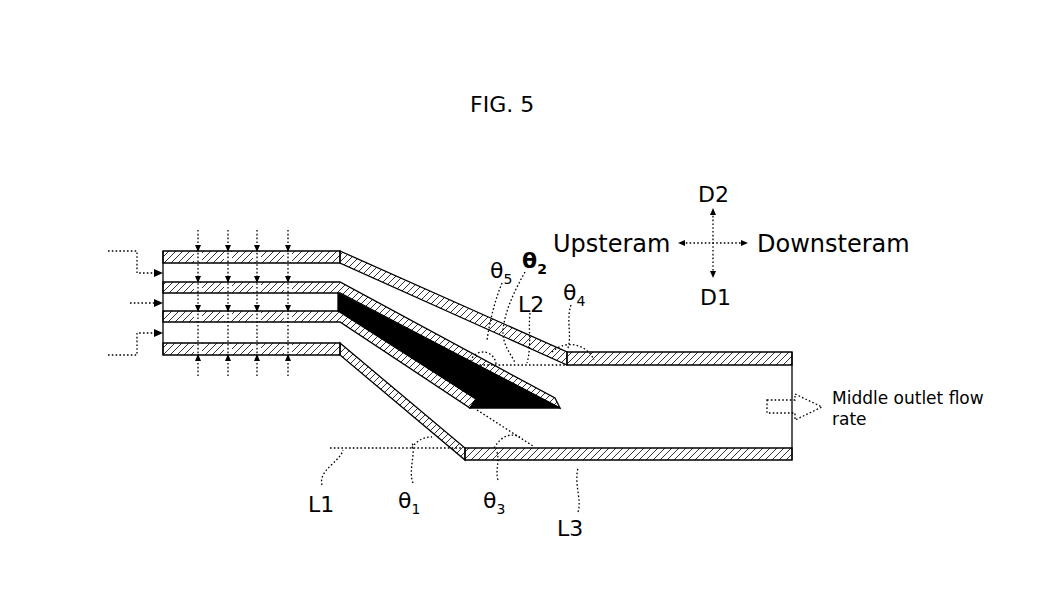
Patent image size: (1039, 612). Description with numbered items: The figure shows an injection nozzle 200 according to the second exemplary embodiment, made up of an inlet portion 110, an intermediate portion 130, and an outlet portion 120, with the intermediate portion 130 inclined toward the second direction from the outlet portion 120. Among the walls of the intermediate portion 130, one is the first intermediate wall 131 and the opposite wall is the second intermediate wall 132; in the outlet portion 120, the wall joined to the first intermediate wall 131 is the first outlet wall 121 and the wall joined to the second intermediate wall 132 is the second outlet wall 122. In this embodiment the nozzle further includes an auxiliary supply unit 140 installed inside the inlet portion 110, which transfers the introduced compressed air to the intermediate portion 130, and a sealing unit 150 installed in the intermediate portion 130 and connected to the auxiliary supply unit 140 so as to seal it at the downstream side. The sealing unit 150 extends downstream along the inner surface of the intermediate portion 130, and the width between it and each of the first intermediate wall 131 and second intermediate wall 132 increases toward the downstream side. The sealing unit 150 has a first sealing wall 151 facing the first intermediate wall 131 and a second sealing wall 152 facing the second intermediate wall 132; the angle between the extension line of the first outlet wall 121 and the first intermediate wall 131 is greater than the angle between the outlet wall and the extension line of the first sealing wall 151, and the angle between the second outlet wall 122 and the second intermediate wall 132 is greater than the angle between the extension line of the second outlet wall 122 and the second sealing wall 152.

The injection nozzle 200 is at (105, 166).
The inlet portion 110 is at (168, 365).
The outlet portion 120 is at (672, 461).
The first outlet wall 121 is at (770, 461).
The second outlet wall 122 is at (658, 352).
The intermediate portion 130 is at (414, 264).
The first intermediate wall 131 is at (400, 405).
The second intermediate wall 132 is at (462, 300).
The auxiliary supply unit 140 is at (177, 278).
The sealing unit 150 is at (358, 343).
The first sealing wall 151 is at (380, 380).
The second sealing wall 152 is at (352, 288).